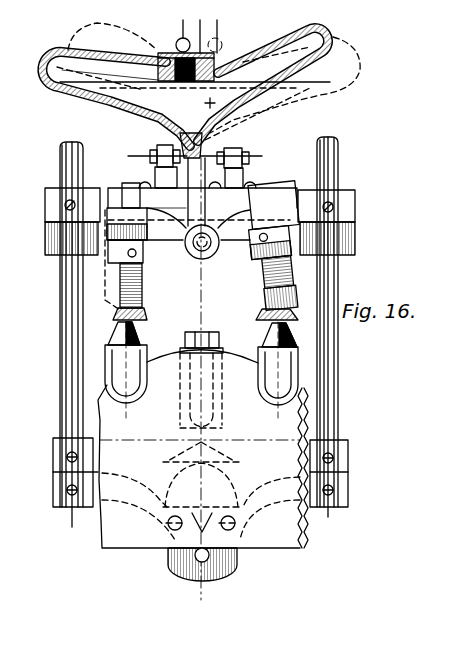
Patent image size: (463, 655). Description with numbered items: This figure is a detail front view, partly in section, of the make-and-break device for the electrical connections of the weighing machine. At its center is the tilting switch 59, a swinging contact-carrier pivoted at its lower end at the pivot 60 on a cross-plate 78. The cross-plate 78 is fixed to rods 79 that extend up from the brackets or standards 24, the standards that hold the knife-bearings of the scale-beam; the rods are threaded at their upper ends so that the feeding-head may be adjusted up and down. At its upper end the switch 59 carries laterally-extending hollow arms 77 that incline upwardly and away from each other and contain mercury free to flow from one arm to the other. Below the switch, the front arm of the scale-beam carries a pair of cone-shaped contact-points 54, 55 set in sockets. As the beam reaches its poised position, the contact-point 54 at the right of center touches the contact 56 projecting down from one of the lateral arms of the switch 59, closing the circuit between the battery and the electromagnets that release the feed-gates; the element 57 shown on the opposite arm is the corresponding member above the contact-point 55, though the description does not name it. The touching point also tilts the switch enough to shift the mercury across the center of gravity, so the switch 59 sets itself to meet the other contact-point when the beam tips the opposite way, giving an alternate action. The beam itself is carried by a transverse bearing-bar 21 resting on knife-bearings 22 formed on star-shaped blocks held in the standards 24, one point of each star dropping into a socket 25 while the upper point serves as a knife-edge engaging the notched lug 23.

The hollow arms 77 is at (54, 50).
The switch 59 is at (207, 147).
The cross-plate 78 is at (340, 202).
The rods 79 is at (62, 347).
The pivot 60 is at (205, 247).
The adjusting screw 57 is at (141, 310).
The contact-point 55 is at (134, 338).
The contact 56 is at (272, 294).
The contact-point 54 is at (276, 325).
The transverse bearing-bar 21 is at (214, 388).
The notched lug 23 is at (222, 437).
The knife-bearings 22 is at (232, 463).
The socket 25 is at (200, 523).
The brackets or standards 24 is at (272, 522).